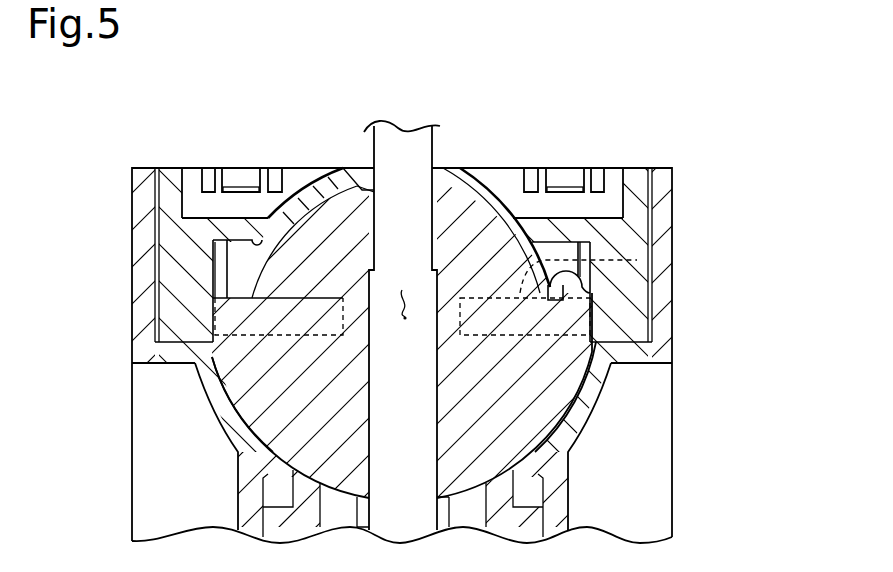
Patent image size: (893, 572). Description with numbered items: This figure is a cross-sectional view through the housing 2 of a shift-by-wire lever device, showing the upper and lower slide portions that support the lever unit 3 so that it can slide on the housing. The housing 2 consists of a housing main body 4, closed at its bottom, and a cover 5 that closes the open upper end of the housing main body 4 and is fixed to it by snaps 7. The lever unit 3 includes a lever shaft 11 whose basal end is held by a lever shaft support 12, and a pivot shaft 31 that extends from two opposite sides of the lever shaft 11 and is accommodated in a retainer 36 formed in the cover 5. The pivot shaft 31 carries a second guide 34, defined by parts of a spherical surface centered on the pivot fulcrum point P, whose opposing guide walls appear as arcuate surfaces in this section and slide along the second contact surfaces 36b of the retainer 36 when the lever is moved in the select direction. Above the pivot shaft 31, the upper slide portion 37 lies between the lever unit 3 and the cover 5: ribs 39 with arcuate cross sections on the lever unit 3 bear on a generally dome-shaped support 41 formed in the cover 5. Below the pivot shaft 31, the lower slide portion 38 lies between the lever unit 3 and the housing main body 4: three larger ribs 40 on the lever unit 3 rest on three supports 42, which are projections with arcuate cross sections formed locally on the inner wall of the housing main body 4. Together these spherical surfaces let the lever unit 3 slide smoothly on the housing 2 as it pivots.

The housing 2 is at (155, 108).
The lever unit 3 is at (525, 112).
The housing main body 4 is at (132, 195).
The cover 5 is at (156, 168).
The snaps 7 is at (228, 168).
The lever shaft 11 is at (432, 148).
The lever shaft support 12 is at (503, 230).
The pivot shaft 31 is at (637, 260).
The second guide 34 is at (215, 336).
The retainer 36 is at (256, 240).
The second contact surfaces 36b is at (221, 298).
The upper slide portion 37 is at (312, 227).
The lower slide portion 38 is at (238, 476).
The ribs 39 is at (333, 183).
The ribs 40 is at (257, 405).
The support 41 is at (337, 187).
The supports 42 is at (230, 422).